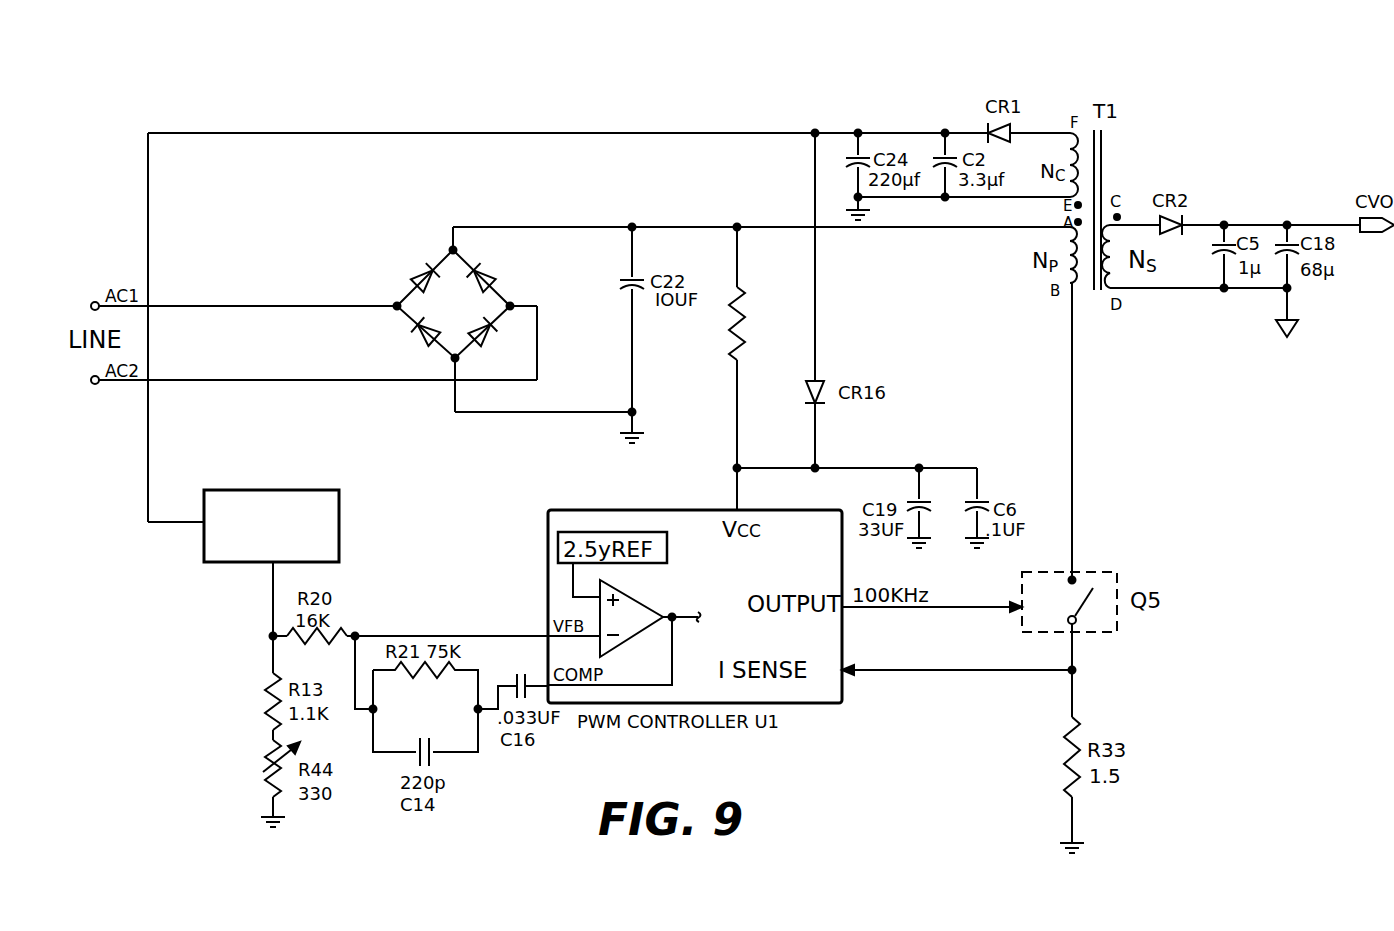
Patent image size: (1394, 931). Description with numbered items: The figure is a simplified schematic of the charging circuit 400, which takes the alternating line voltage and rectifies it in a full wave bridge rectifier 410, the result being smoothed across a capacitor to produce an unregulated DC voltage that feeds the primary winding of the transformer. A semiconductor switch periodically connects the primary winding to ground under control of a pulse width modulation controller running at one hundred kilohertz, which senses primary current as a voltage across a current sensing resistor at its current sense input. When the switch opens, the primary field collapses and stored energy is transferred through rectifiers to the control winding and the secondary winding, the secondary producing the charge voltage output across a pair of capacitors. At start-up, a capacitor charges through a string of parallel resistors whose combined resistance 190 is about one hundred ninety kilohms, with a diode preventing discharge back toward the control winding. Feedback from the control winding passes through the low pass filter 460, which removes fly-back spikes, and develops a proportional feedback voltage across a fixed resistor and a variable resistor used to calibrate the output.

The power supply circuit 400 is at (674, 128).
The bridge rectifier 410 is at (408, 286).
The low pass filter 460 is at (292, 490).
The resistor R34-R42 190 is at (742, 343).